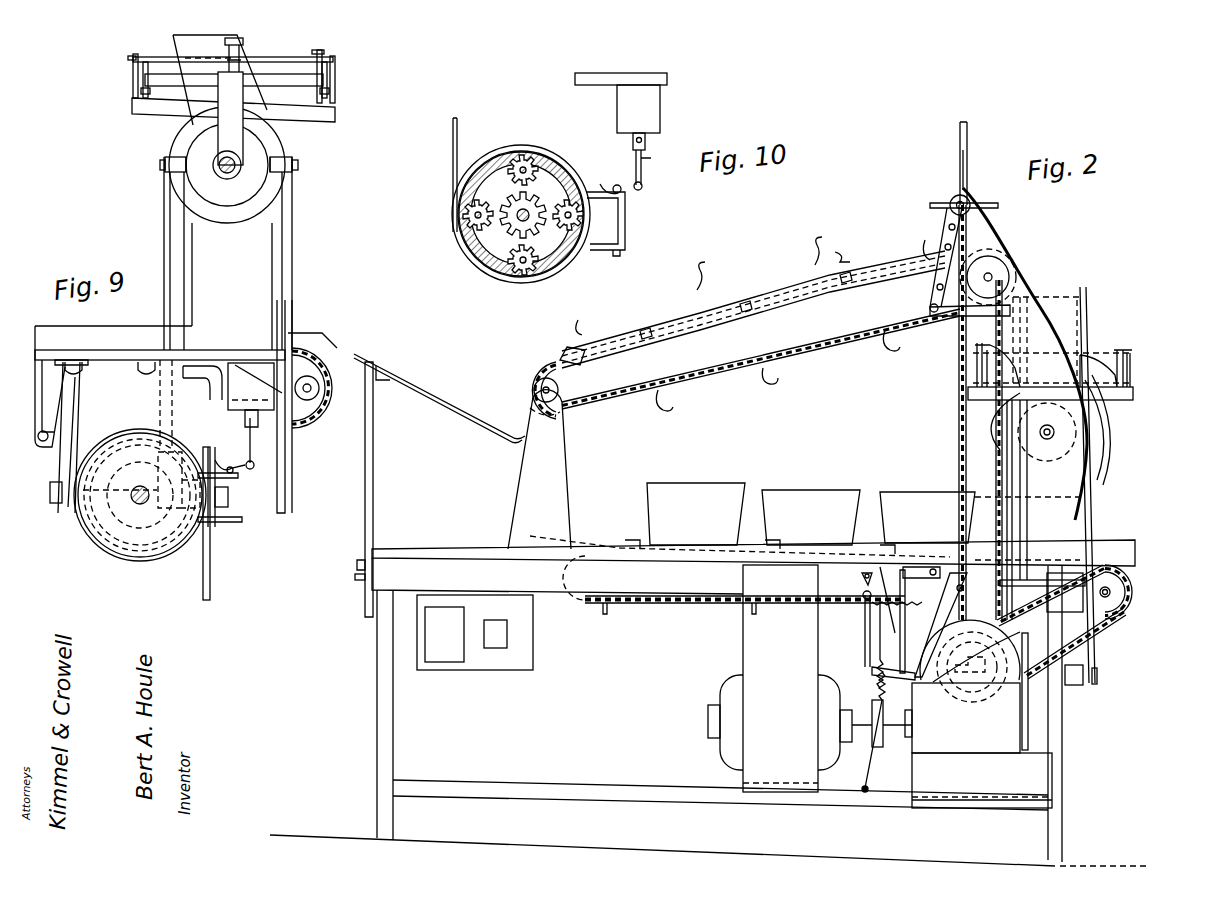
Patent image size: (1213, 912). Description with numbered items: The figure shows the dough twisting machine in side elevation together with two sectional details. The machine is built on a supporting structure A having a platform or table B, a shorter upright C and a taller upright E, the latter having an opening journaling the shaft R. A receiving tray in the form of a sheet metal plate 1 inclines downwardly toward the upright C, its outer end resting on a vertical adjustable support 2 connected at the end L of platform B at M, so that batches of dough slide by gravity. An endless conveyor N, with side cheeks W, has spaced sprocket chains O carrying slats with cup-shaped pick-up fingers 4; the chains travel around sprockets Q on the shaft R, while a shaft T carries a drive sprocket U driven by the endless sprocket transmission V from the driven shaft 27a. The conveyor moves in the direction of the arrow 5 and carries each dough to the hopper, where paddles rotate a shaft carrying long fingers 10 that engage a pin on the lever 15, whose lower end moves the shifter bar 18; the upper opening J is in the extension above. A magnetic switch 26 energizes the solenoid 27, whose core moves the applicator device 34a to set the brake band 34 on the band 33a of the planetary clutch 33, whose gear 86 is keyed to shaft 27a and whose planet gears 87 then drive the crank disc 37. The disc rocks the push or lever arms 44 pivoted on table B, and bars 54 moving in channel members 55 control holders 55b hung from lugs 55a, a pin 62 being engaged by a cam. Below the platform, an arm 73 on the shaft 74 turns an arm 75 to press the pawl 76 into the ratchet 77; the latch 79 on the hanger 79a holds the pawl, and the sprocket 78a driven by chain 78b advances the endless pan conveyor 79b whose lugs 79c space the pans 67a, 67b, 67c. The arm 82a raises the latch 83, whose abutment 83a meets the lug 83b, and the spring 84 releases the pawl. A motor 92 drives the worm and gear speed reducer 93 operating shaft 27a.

In FIG. 2, the sheet metal plate 1 is at (470, 420).
In FIG. 2, the vertical adjustable support 2 is at (374, 455).
In FIG. 2, the dough pick-up fingers 4 is at (812, 262).
In FIG. 2, the arrow 5 is at (836, 252).
In FIG. 2, the long fingers 10 is at (968, 133).
In FIG. 2, the lever 15 is at (928, 295).
In FIG. 2, the shifter bar 18 is at (945, 316).
In FIG. 2, the magnetic switch 26 is at (508, 633).
In FIG. 9, the solenoid 27 is at (238, 363).
In FIG. 10, the solenoid 27 is at (655, 118).
In FIG. 9, the driven shaft 27a is at (141, 480).
In FIG. 10, the driven shaft 27a is at (523, 214).
In FIG. 9, the planetary clutch 33 is at (166, 560).
In FIG. 10, the planetary clutch 33 is at (547, 160).
In FIG. 9, the outer shell, casing or band 33a is at (138, 562).
In FIG. 9, the brake band 34 is at (108, 556).
In FIG. 10, the brake band 34 is at (566, 272).
In FIG. 9, the applicator device 34a is at (236, 468).
In FIG. 10, the applicator device 34a is at (625, 192).
In FIG. 9, the crank disc 37 is at (210, 570).
In FIG. 10, the crank disc 37 is at (455, 175).
In FIG. 2, the crank disc 37 is at (1028, 722).
In FIG. 9, the push or lever arms 44 is at (164, 246).
In FIG. 2, the push or lever arms 44 is at (1110, 531).
In FIG. 9, the bars 54 is at (133, 60).
In FIG. 2, the bars 54 is at (1132, 368).
In FIG. 9, the channel members 55 is at (143, 88).
In FIG. 2, the lugs 55a is at (1000, 398).
In FIG. 2, the twisted dough holders 55b is at (1110, 425).
In FIG. 2, the bar or pin 62 is at (1090, 355).
In FIG. 2, the pan 67a is at (705, 480).
In FIG. 2, the pan 67b is at (893, 490).
In FIG. 2, the pan 67c is at (795, 487).
In FIG. 9, the arm 73 is at (247, 432).
In FIG. 2, the arm 73 is at (944, 625).
In FIG. 2, the shaft 74 is at (876, 660).
In FIG. 2, the arm 75 is at (870, 670).
In FIG. 2, the pawl 76 is at (945, 565).
In FIG. 2, the ratchet 77 is at (950, 688).
In FIG. 2, the sprocket 78a is at (1132, 605).
In FIG. 2, the endless chain 78b is at (1108, 632).
In FIG. 2, the latch 79 is at (908, 678).
In FIG. 2, the hanger 79a is at (878, 620).
In FIG. 2, the endless pan conveyor 79b is at (660, 606).
In FIG. 2, the lugs 79c is at (606, 614).
In FIG. 2, the arm 82a is at (903, 568).
In FIG. 2, the latch 83 is at (862, 645).
In FIG. 2, the abutment 83a is at (870, 628).
In FIG. 2, the lug 83b is at (866, 581).
In FIG. 2, the spring 84 is at (880, 565).
In FIG. 10, the gear 86 is at (518, 233).
In FIG. 2, the gear 86 is at (1020, 582).
In FIG. 10, the planet gears 87 is at (520, 272).
In FIG. 2, the motor 92 is at (740, 748).
In FIG. 2, the worm and gear speed reducer 93 is at (915, 752).
In FIG. 2, the supporting structure A is at (395, 705).
In FIG. 2, the platform or table B is at (410, 548).
In FIG. 2, the upright C is at (562, 472).
In FIG. 2, the upright E is at (1090, 480).
In FIG. 2, the upper opening J is at (968, 200).
In FIG. 2, the end of platform L is at (357, 563).
In FIG. 2, the connection M is at (357, 578).
In FIG. 2, the endless conveyor N is at (710, 372).
In FIG. 2, the sprocket chains O is at (855, 335).
In FIG. 2, the sprockets Q is at (516, 380).
In FIG. 2, the shaft R is at (567, 388).
In FIG. 2, the shaft T is at (1009, 274).
In FIG. 2, the drive sprocket U is at (1005, 258).
In FIG. 2, the endless sprocket transmission V is at (957, 415).
In FIG. 2, the side cheeks W is at (660, 326).